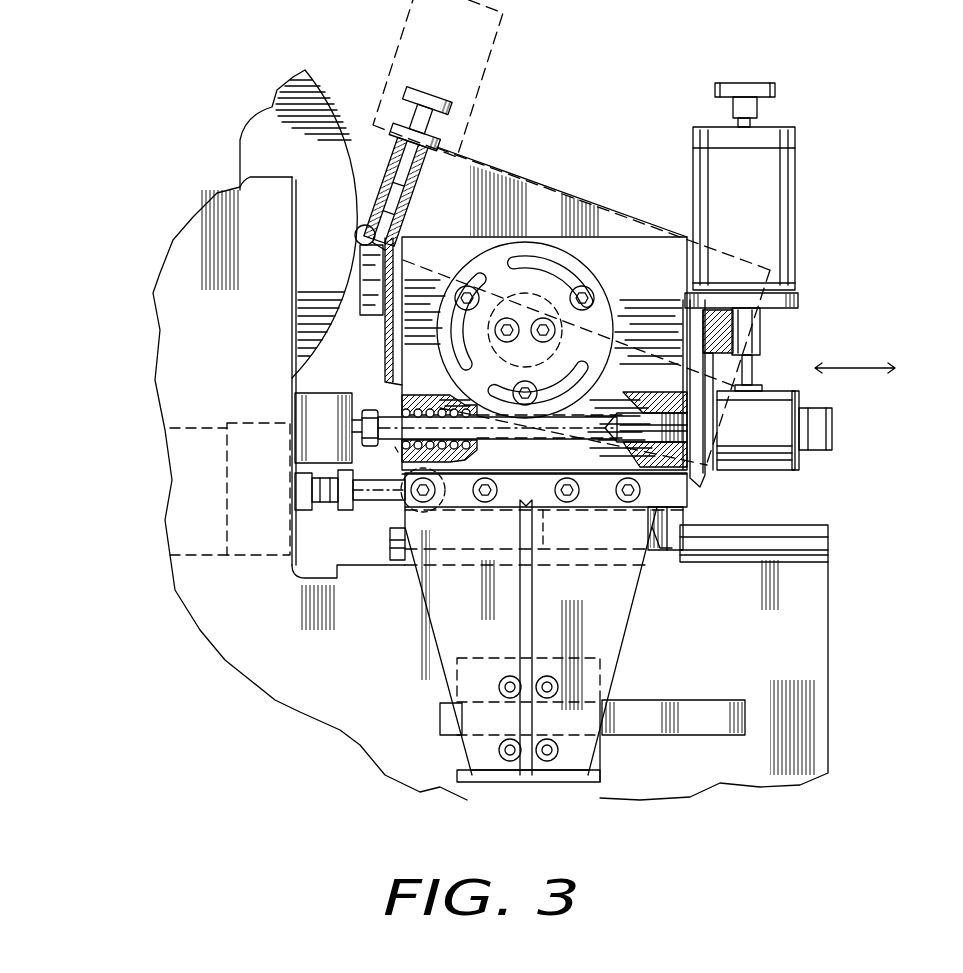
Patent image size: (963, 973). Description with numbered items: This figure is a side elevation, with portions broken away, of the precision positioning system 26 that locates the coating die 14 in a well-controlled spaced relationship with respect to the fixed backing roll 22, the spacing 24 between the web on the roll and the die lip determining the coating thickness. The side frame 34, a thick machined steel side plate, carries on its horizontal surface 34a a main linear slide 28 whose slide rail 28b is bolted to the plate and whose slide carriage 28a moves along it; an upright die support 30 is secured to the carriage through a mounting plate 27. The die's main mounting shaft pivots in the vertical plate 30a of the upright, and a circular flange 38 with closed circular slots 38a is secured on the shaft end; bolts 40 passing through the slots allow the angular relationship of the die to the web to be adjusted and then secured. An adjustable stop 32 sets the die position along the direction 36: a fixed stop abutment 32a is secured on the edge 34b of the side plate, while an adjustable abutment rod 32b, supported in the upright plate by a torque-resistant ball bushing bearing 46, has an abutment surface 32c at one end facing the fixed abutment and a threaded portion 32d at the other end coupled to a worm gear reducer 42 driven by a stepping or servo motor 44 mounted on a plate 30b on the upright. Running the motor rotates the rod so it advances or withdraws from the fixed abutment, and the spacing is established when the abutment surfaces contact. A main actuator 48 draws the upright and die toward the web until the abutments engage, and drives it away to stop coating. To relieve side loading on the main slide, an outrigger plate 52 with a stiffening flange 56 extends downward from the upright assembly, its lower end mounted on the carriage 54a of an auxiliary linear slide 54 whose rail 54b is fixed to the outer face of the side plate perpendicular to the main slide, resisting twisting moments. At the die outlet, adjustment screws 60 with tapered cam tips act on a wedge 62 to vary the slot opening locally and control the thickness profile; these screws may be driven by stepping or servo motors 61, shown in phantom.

The die 14 is at (482, 167).
The backing roll 22 is at (320, 80).
The spacing 24 is at (352, 312).
The precision positioning system 26 is at (806, 334).
The mounting plate 27 is at (660, 548).
The main linear slides 28 is at (765, 498).
The slide carriage 28a is at (392, 508).
The slide rail 28b is at (805, 525).
The upright die support 30 is at (627, 235).
The vertical plate of upright 30a is at (535, 235).
The motor mounting plate 30b is at (802, 302).
The adjustable stop 32 is at (325, 385).
The fixed stop abutment 32a is at (310, 405).
The adjustable abutment rod 32b is at (395, 447).
The abutment surface 32c is at (368, 410).
The threaded portion 32d is at (692, 472).
The side frame 34 is at (352, 644).
The horizontal surface 34a is at (352, 558).
The edge of side plate 34b is at (297, 255).
The direction 36 is at (840, 368).
The circular flange 38 is at (607, 290).
The closed circular slots 38a is at (578, 275).
The bolts 40 is at (466, 285).
The worm gear reducer 42 is at (800, 396).
The stepping or servo motor 44 is at (795, 200).
The torque-resistant ball bushing bearing 46 is at (398, 413).
The main actuator 48 is at (205, 407).
The outrigger plate 52 is at (636, 620).
The auxiliary linear slide 54 is at (608, 740).
The auxiliary slide carriage 54a is at (600, 780).
The auxiliary slide rail 54b is at (683, 700).
The stiffening flange 56 is at (520, 603).
The adjustment screws 60 is at (428, 92).
The stepping or servo motors 61 is at (495, 65).
The wedge 62 is at (398, 242).